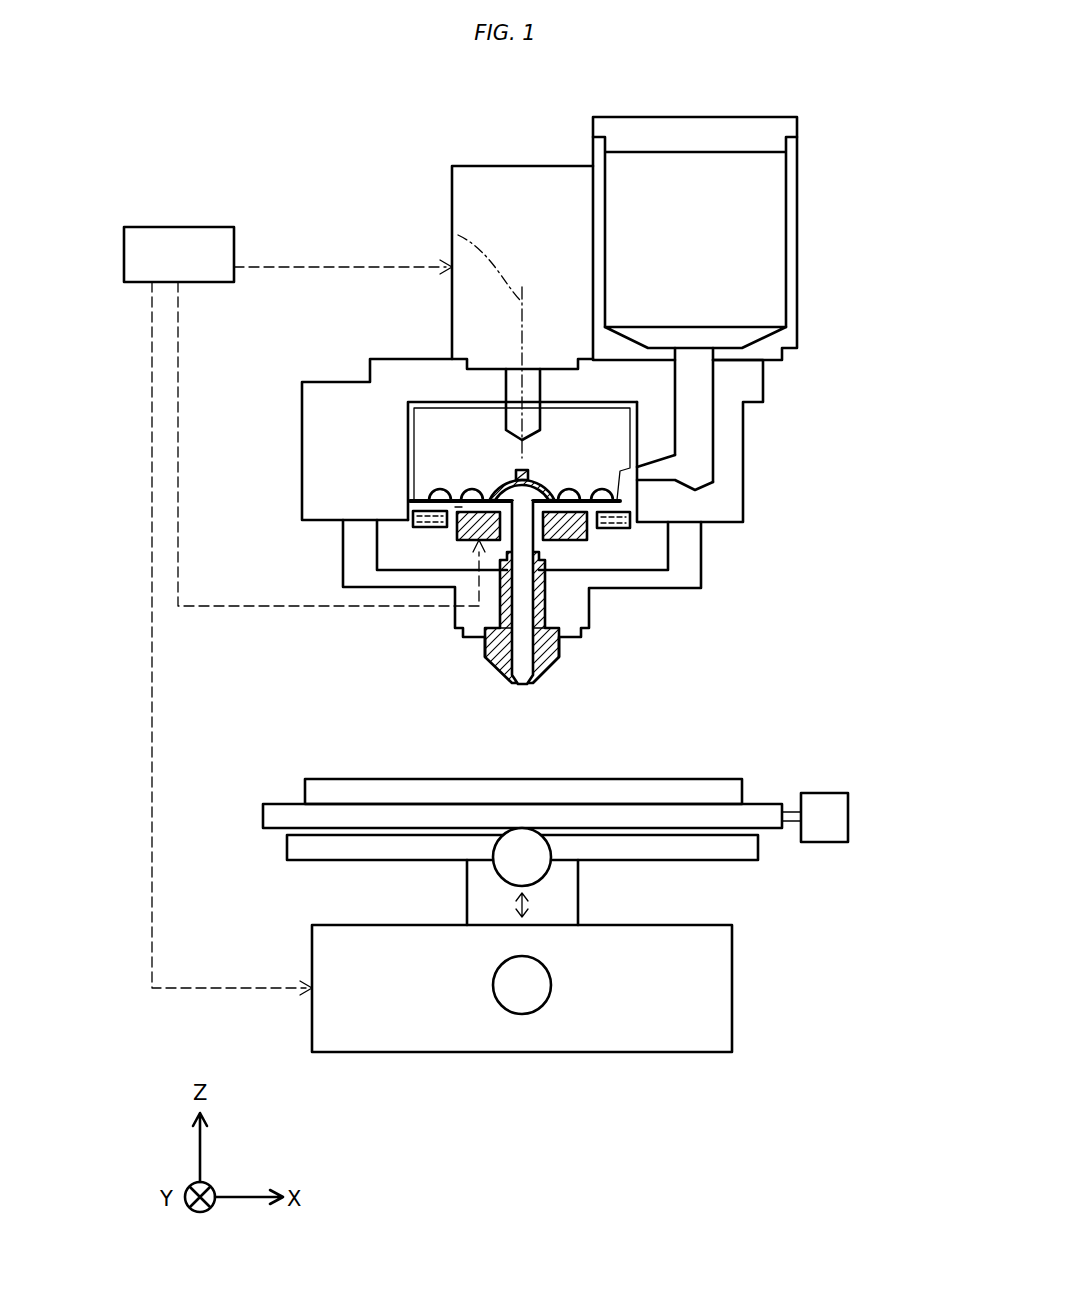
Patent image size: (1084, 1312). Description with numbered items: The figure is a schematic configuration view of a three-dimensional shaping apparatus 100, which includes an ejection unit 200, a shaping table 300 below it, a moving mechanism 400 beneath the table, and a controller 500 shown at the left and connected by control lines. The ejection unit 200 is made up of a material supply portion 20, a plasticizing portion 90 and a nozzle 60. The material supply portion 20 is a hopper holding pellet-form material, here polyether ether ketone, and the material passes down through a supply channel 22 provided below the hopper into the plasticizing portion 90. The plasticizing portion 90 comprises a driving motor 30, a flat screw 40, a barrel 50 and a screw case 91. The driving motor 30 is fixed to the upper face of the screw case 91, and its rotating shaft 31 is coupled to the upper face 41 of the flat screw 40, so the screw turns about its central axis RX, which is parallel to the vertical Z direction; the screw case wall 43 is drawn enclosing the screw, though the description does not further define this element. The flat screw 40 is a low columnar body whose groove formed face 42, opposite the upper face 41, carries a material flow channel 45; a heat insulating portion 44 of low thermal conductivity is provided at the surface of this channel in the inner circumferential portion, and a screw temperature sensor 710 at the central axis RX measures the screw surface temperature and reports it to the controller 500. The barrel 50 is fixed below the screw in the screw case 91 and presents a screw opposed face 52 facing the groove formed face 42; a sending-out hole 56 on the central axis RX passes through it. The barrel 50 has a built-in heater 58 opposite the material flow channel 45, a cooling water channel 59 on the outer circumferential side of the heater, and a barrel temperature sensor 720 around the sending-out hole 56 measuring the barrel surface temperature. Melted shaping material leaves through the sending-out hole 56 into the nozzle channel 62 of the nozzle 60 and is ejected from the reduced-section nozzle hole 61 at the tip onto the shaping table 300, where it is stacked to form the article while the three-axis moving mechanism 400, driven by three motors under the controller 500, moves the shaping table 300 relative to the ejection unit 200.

The three-dimensional shaping apparatus 100 is at (213, 111).
The controller 500 is at (186, 227).
The ejection unit 200 is at (817, 155).
The material supply portion 20 is at (798, 232).
The supply channel 22 is at (697, 437).
The driving motor 30 is at (452, 188).
The central axis RX is at (458, 235).
The rotating shaft 31 is at (513, 370).
The upper face 41 is at (437, 402).
The case wall 43 is at (408, 422).
The flat screw 40 is at (413, 455).
The groove formed face 42 is at (460, 507).
The material flow channel 45 is at (443, 495).
The screw opposed face 52 is at (488, 498).
The screw temperature sensor 710 is at (528, 474).
The heat insulating portion 44 is at (645, 488).
The screw case 91 is at (703, 537).
The plasticizing portion 90 is at (730, 604).
The barrel 50 is at (387, 543).
The cooling water channel 59 is at (430, 527).
The heater 58 is at (470, 540).
The barrel temperature sensor 720 is at (457, 510).
The nozzle 60 is at (557, 694).
The sending-out hole 56 is at (523, 542).
The nozzle channel 62 is at (520, 627).
The nozzle hole 61 is at (522, 686).
The shaping table 300 is at (742, 790).
The moving mechanism 400 is at (787, 916).